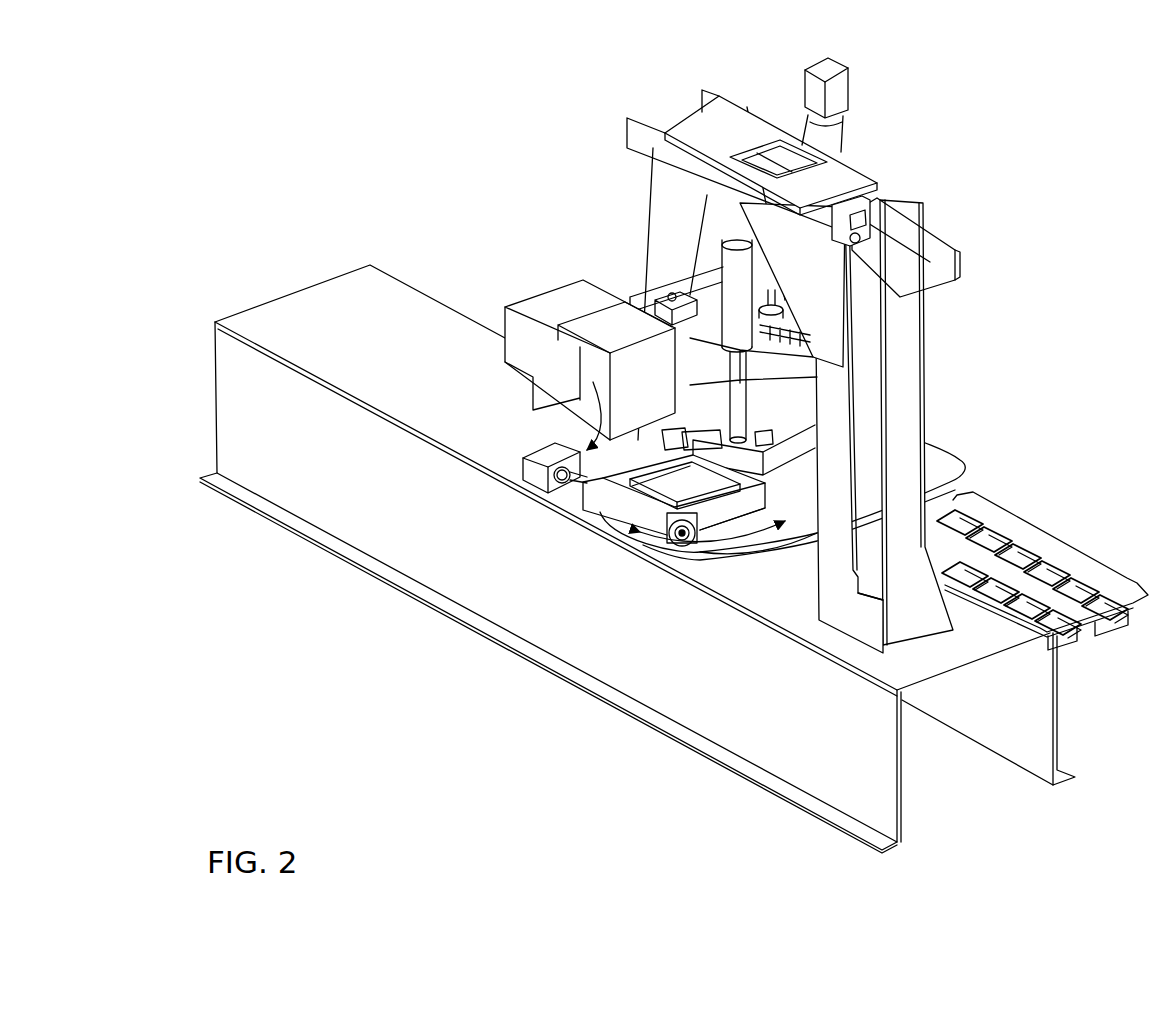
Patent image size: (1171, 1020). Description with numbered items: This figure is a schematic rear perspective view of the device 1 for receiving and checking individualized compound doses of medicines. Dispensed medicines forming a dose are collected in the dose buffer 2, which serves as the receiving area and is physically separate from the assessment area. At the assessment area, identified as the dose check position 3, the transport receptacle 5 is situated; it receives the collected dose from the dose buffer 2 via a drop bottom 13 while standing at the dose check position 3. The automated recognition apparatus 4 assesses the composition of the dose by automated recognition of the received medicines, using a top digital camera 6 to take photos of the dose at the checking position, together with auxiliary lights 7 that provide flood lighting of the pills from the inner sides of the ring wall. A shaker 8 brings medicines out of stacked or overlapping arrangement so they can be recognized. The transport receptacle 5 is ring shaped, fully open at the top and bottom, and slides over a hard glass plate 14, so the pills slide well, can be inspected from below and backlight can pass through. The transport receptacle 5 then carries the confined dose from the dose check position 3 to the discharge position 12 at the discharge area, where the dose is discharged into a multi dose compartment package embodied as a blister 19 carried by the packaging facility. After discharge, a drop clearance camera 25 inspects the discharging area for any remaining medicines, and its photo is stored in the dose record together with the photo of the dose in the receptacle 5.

The device 1 is at (506, 728).
The dose buffer 2 is at (590, 330).
The dose check position 3 is at (697, 490).
The automated recognition apparatus 4 is at (630, 250).
The transport receptacle 5 is at (745, 505).
The top digital camera 6 is at (867, 197).
The lights 7 is at (713, 470).
The shaker 8 is at (583, 485).
The discharge position 12 is at (793, 480).
The drop bottom 13 is at (525, 446).
The glass plate 14 is at (765, 528).
The blister 19 is at (1098, 648).
The drop clearance camera 25 is at (835, 98).